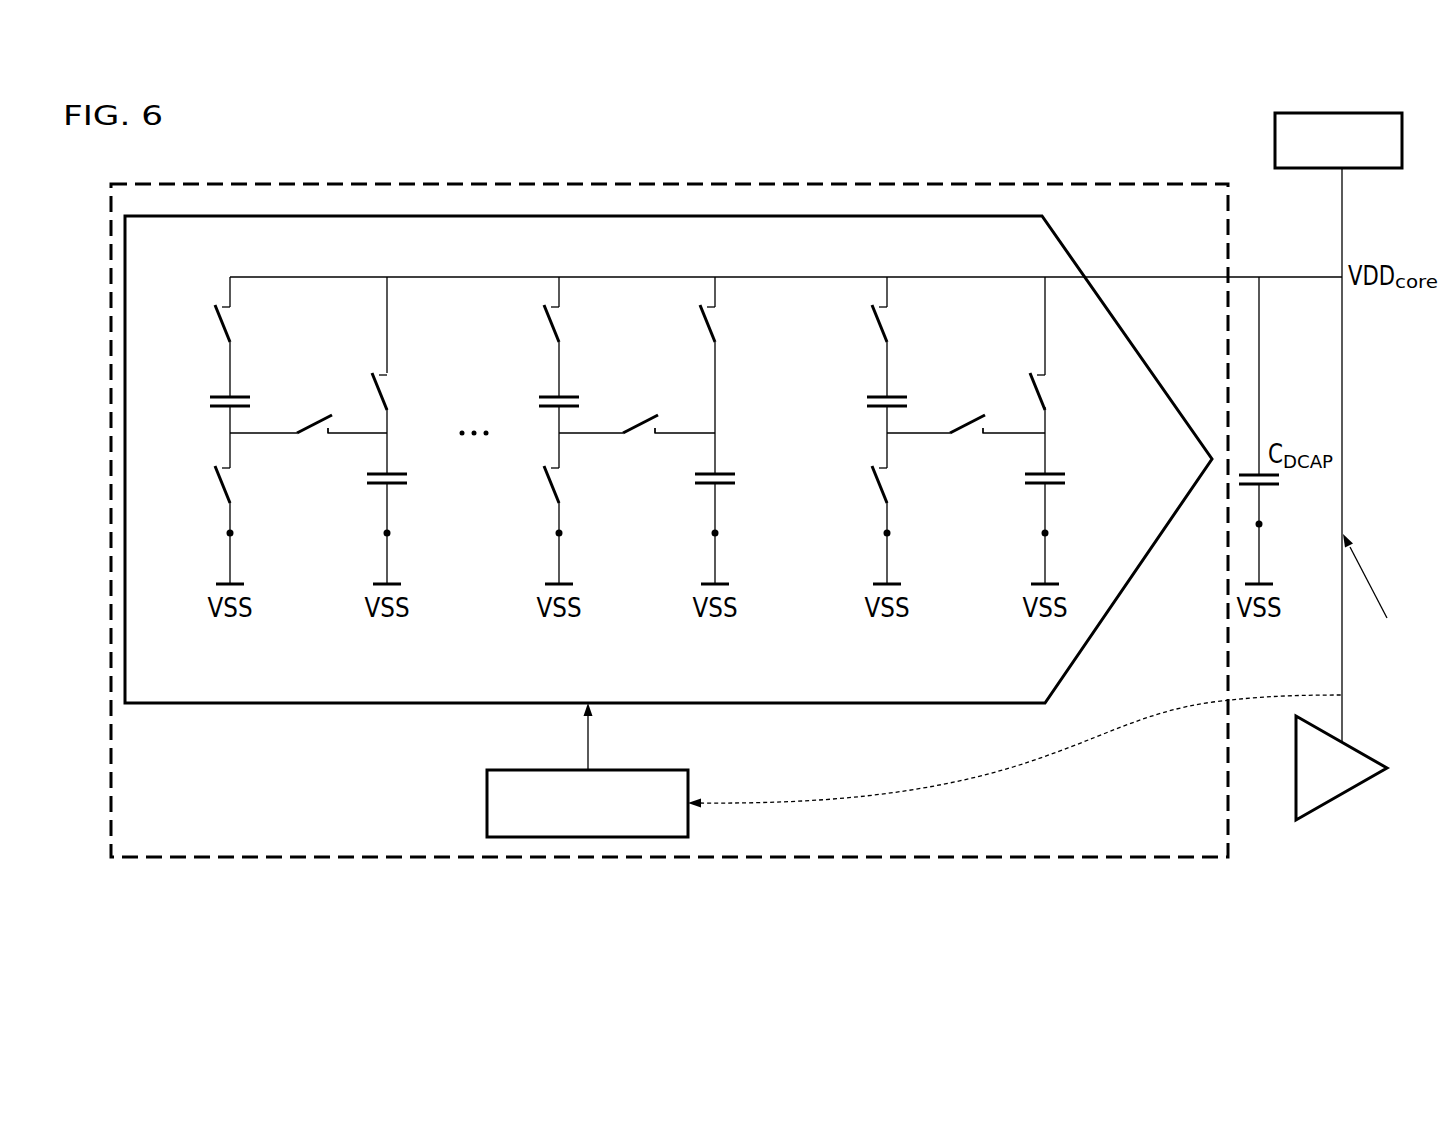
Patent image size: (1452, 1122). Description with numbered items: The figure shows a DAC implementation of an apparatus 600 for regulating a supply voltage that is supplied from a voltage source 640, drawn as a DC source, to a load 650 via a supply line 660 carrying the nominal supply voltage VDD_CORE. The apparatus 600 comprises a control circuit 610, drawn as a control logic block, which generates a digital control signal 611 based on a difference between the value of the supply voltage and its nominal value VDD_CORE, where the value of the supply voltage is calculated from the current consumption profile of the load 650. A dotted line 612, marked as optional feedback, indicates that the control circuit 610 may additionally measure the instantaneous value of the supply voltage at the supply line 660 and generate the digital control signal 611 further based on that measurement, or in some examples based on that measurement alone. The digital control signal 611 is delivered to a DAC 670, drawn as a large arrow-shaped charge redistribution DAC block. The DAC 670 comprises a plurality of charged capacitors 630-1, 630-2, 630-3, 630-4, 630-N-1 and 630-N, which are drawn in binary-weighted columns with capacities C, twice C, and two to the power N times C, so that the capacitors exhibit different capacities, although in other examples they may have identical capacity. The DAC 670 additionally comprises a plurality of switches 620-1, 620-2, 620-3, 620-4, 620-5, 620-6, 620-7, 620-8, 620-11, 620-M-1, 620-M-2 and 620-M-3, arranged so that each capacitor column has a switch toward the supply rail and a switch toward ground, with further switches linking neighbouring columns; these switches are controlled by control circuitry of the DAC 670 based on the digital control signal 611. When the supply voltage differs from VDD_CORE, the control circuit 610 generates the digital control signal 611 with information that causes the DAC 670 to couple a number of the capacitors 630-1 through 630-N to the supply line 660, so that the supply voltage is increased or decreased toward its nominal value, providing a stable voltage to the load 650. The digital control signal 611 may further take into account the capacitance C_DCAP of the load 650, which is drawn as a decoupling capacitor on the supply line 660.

The apparatus 600 is at (691, 184).
The control circuit 610 is at (487, 800).
The digital control signal 611 is at (590, 742).
The line 612 is at (1175, 703).
The switch 620-1 is at (1085, 367).
The switch 620-2 is at (977, 446).
The switch 620-3 is at (880, 490).
The switch 620-4 is at (880, 328).
The switch 620-5 is at (710, 328).
The switch 620-6 is at (642, 428).
The switch 620-7 is at (553, 485).
The switch 620-8 is at (553, 327).
The switch 620-11 is at (220, 323).
The switch 620-M-1 is at (222, 484).
The switch 620-M-2 is at (315, 420).
The switch 620-M-3 is at (447, 343).
The capacitor 630-1 is at (1072, 460).
The capacitor 630-2 is at (910, 379).
The capacitor 630-3 is at (740, 455).
The capacitor 630-4 is at (576, 376).
The capacitor 630-N is at (250, 383).
The capacitor 630-N-1 is at (412, 502).
The voltage source 640 is at (1275, 140).
The load 650 is at (1338, 802).
The supply line 660 is at (1342, 377).
The DAC 670 is at (267, 703).